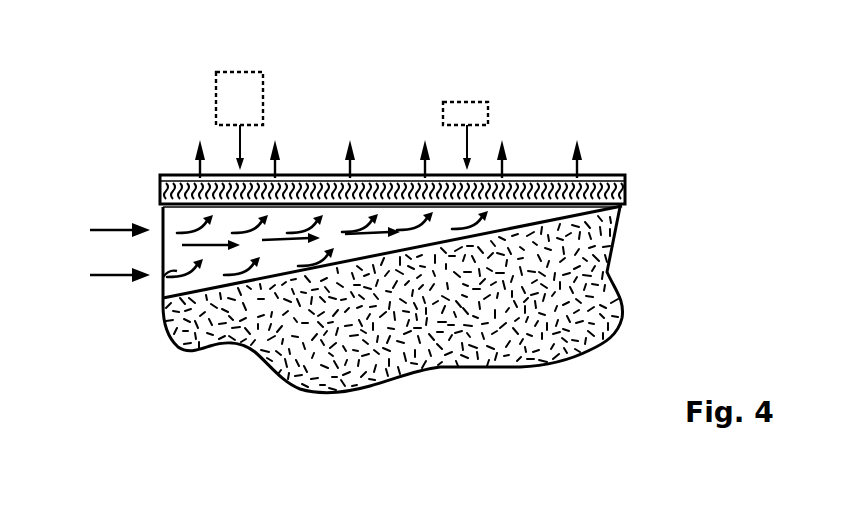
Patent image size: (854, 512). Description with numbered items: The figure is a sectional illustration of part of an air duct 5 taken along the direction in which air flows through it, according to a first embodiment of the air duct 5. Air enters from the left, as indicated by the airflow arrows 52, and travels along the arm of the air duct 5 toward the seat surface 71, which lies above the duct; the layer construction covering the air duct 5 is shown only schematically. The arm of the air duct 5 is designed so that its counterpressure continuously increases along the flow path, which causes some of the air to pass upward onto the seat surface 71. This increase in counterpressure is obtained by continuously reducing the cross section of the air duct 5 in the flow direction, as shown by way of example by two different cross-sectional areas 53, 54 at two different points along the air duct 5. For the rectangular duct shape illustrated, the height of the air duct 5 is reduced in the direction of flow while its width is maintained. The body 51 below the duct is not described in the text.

The air duct 5 is at (182, 222).
The porous body 51 is at (614, 292).
The airflow arrows 52 is at (117, 278).
The cross-sectional area 53 is at (248, 98).
The cross-sectional area 54 is at (475, 112).
The seat surface 71 is at (602, 168).